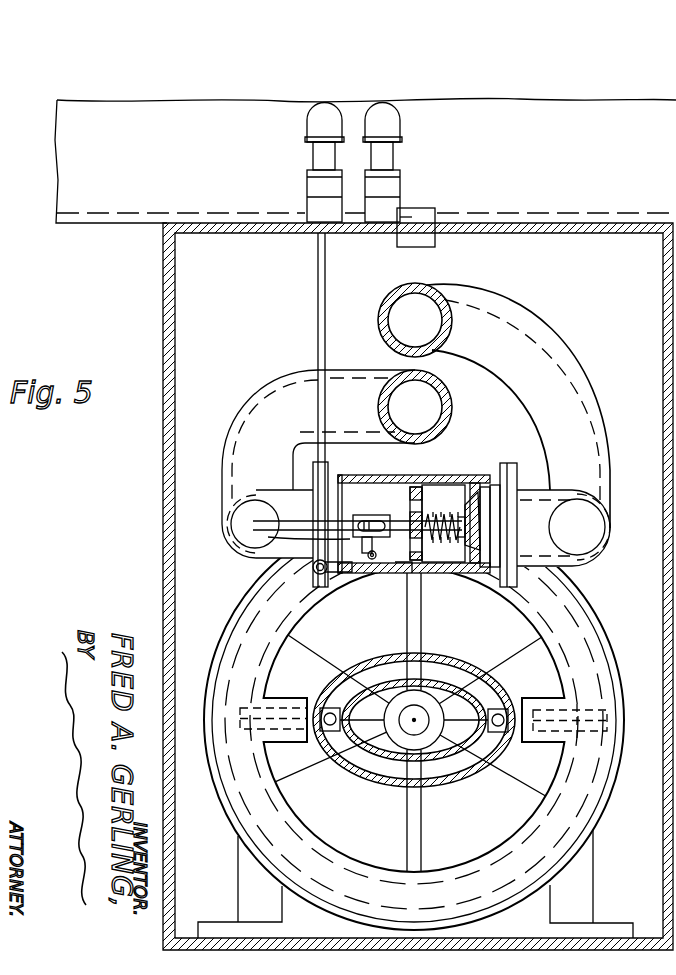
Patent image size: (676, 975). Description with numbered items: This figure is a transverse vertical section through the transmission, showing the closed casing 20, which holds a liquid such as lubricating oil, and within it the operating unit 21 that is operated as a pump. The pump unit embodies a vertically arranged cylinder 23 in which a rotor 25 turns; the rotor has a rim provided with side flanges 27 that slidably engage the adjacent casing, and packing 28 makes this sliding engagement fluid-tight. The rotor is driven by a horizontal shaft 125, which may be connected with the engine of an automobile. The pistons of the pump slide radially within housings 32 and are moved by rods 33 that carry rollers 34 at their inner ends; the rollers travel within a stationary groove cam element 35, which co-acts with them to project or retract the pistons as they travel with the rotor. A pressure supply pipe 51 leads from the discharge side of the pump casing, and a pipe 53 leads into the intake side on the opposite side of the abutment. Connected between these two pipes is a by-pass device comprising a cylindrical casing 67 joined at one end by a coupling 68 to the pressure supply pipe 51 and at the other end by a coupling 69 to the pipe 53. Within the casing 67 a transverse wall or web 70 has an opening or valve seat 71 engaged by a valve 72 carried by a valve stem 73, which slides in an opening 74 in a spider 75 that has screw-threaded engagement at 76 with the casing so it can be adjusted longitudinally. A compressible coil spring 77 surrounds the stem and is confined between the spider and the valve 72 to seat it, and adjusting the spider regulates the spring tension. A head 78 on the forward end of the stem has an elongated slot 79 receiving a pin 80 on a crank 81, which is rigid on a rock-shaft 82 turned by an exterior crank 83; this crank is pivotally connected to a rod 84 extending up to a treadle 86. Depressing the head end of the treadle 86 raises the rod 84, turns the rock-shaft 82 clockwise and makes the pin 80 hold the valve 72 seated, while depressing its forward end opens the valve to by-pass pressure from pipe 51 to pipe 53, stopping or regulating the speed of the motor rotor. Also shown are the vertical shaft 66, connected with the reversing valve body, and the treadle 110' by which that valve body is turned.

The closed casing 20 is at (163, 437).
The operating unit 21 is at (233, 835).
The cylinder 23 is at (600, 822).
The rotor 25 is at (470, 862).
The side flanges 27 is at (463, 890).
The packing 28 is at (372, 863).
The housings 32 is at (287, 697).
The rods 33 is at (329, 680).
The rollers 34 is at (314, 733).
The groove cam element 35 is at (480, 785).
The pressure supply pipe 51 is at (530, 338).
The pipe 53 is at (287, 396).
The vertical shaft 66 is at (432, 247).
The cylindrical casing 67 is at (438, 470).
The coupling 68 is at (505, 470).
The coupling 69 is at (301, 458).
The wall or web 70 is at (483, 484).
The opening or valve seat 71 is at (478, 567).
The valve 72 is at (483, 530).
The valve stem 73 is at (447, 545).
The opening 74 is at (421, 548).
The spider 75 is at (412, 572).
The screw-threaded engagement 76 is at (430, 483).
The compressible coil spring 77 is at (443, 523).
The head 78 is at (376, 520).
The elongated slot 79 is at (363, 515).
The pin 80 is at (300, 520).
The crank 81 is at (297, 536).
The rock-shaft 82 is at (372, 560).
The crank 83 is at (325, 575).
The rod 84 is at (326, 333).
The treadle 86 is at (318, 153).
The treadle 110' is at (403, 163).
The horizontal shaft 125 is at (353, 786).